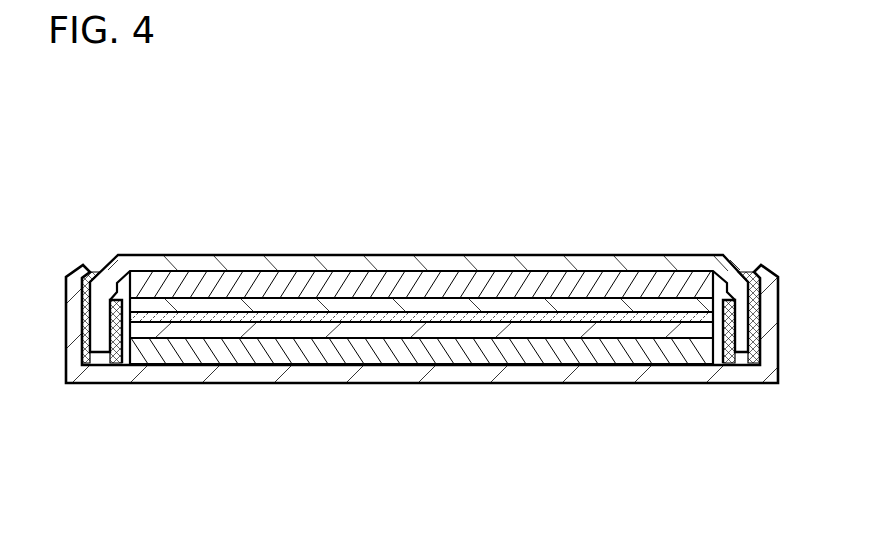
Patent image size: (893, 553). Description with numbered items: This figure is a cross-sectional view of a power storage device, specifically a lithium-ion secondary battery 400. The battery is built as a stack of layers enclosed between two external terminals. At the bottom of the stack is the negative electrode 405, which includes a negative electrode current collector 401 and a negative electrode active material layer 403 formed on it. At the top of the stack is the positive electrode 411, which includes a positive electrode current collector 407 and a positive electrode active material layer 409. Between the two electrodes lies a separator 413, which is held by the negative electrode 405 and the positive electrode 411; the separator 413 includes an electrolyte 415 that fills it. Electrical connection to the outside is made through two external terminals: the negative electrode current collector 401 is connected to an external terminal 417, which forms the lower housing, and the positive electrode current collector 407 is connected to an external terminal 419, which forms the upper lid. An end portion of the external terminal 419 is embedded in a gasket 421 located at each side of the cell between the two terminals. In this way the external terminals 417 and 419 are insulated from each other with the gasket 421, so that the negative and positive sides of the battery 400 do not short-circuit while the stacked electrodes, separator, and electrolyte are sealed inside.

The lithium-ion secondary battery 400 is at (168, 198).
The negative electrode current collector 401 is at (197, 362).
The negative electrode active material layer 403 is at (258, 330).
The negative electrode 405 is at (278, 470).
The positive electrode current collector 407 is at (400, 283).
The positive electrode active material layer 409 is at (340, 305).
The positive electrode 411 is at (423, 178).
The separator 413 is at (487, 318).
The electrolyte 415 is at (421, 251).
The external terminal 417 is at (553, 376).
The external terminal 419 is at (627, 268).
The gasket 421 is at (97, 276).